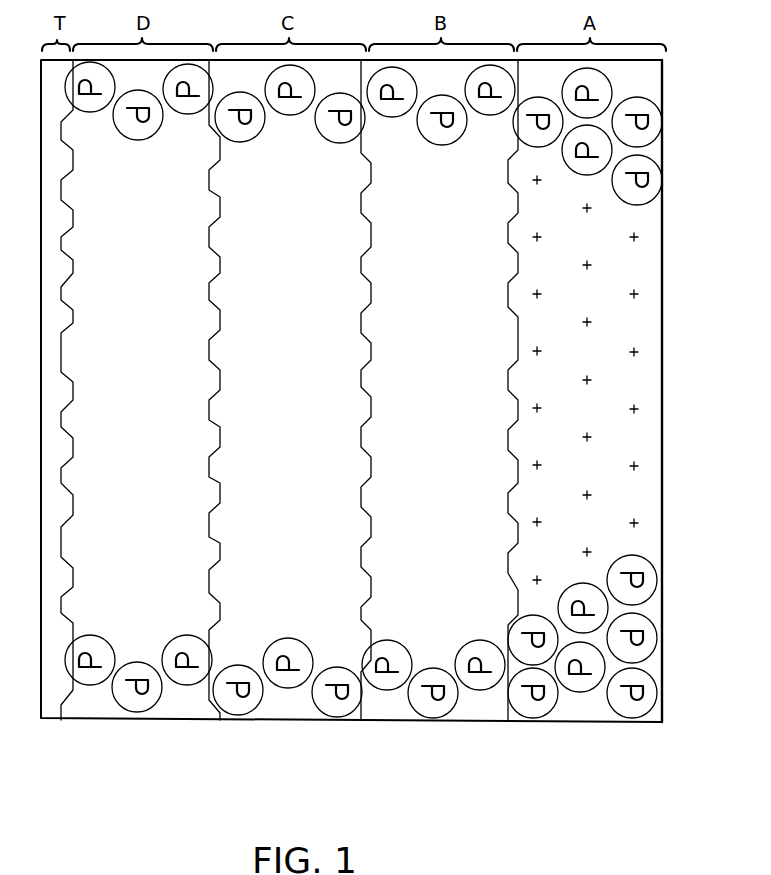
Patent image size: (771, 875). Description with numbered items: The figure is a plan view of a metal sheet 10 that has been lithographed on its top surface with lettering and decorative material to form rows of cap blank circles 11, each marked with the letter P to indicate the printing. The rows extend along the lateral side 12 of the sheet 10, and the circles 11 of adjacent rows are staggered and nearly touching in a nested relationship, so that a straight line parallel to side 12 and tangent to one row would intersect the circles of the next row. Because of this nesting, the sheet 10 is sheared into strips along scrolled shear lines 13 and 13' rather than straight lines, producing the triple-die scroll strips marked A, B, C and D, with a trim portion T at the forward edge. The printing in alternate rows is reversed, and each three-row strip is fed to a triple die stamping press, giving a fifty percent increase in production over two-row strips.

The metal sheet 10 is at (545, 727).
The cap blank circles 11 is at (446, 146).
The lateral side 12 is at (663, 428).
The scrolled shear line 13 is at (239, 390).
The scrolled shear line 13' is at (393, 390).